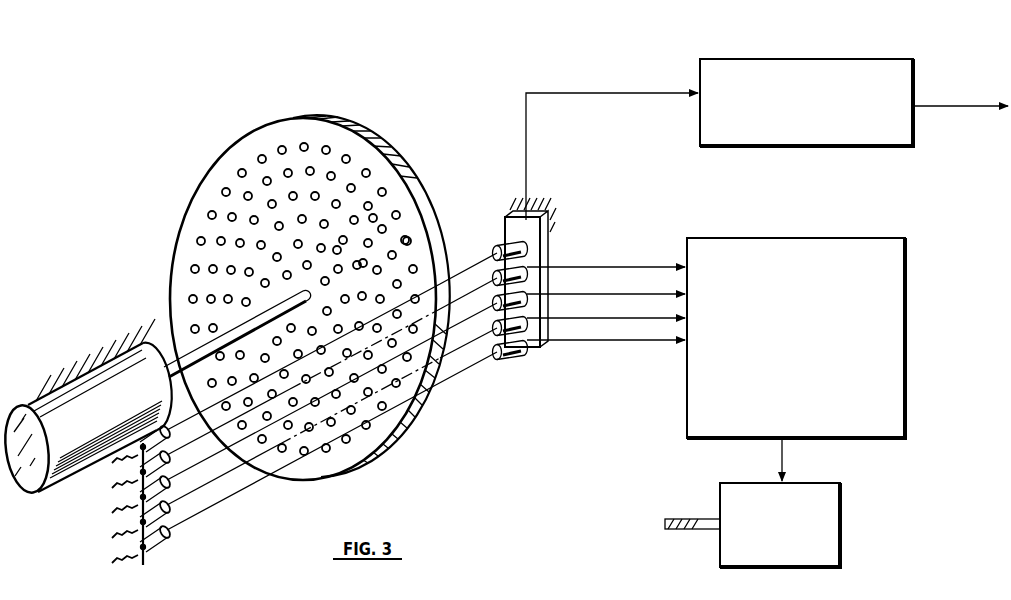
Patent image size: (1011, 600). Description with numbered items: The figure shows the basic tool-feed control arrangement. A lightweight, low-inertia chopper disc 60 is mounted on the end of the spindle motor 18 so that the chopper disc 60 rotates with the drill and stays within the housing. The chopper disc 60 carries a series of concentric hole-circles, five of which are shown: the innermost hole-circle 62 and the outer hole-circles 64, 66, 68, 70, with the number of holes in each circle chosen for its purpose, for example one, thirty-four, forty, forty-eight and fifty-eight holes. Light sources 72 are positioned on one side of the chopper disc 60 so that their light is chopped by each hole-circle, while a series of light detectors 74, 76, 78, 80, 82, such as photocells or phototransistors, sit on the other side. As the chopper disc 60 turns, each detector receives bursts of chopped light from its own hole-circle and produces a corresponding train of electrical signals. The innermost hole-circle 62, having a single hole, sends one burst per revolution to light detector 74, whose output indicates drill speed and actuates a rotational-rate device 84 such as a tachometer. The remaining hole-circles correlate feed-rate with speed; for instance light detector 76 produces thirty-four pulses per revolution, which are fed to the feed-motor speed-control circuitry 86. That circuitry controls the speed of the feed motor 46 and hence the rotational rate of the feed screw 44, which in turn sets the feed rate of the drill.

The spindle motor 18 is at (86, 466).
The feed screw 44 is at (675, 518).
The feed motor 46 is at (822, 520).
The chopper disc 60 is at (290, 128).
The innermost hole-circle 62 is at (301, 357).
The hole-circle 64 is at (334, 252).
The hole-circle 66 is at (367, 264).
The hole-circle 68 is at (376, 221).
The hole-circle 70 is at (409, 240).
The light sources 72 is at (170, 506).
The light detector 74 is at (492, 247).
The light detector 76 is at (492, 273).
The light detector 78 is at (492, 300).
The light detector 80 is at (492, 327).
The light detector 82 is at (497, 359).
The rotational-rate device 84 is at (773, 70).
The feed-motor speed-control circuitry 86 is at (873, 365).